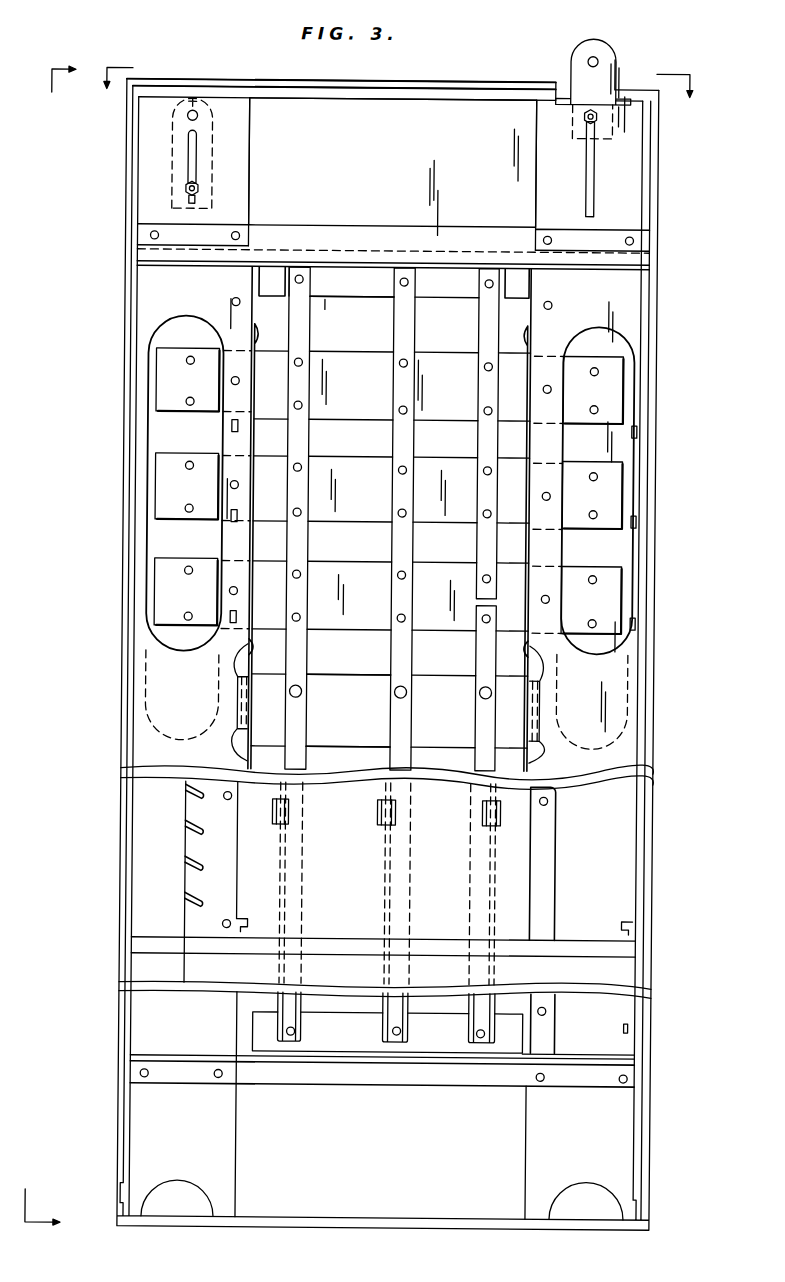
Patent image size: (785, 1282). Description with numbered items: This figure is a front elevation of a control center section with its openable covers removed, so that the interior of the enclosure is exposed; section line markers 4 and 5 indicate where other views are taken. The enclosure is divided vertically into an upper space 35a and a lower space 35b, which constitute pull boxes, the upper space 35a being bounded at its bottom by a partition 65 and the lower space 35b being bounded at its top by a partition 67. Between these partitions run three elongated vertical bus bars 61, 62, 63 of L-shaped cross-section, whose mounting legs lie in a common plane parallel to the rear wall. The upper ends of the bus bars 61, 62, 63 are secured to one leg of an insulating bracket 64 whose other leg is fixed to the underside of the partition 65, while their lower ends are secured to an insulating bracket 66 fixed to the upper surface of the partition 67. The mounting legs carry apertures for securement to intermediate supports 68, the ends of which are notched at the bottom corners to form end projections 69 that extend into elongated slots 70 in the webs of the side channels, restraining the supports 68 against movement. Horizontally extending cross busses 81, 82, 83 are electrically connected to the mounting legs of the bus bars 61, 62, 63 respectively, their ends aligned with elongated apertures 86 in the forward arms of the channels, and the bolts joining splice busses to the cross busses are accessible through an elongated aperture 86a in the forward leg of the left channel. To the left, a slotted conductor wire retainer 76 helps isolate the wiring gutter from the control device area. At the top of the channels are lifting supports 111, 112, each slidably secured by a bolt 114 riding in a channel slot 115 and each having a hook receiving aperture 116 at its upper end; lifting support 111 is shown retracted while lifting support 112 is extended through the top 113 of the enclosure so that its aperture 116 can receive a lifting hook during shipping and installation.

The top 113 is at (498, 65).
The upper space 35a is at (373, 72).
The lifting support 112 is at (575, 58).
The hook receiving aperture 116 is at (595, 61).
The lifting support 111 is at (168, 137).
The channel slot 115 is at (188, 162).
The bolt 114 is at (185, 192).
The partition 65 is at (357, 232).
The insulating bracket 64 is at (331, 298).
The bus bar 61 is at (311, 713).
The bus bar 62 is at (391, 733).
The bus bar 63 is at (470, 719).
The intermediate support 68 is at (366, 689).
The elongated aperture 86a is at (148, 428).
The elongated aperture 86 is at (630, 459).
The cross buss 82 is at (182, 381).
The cross buss 81 is at (180, 483).
The cross buss 83 is at (168, 590).
The elongated slot 70 is at (254, 648).
The end projection 69 is at (230, 728).
The slotted conductor wire retainer 76 is at (182, 846).
The insulating bracket 66 is at (352, 1044).
The partition 67 is at (357, 1064).
The lower space 35b is at (400, 1174).
The section line 5 is at (57, 650).
The section line 4 is at (394, 93).